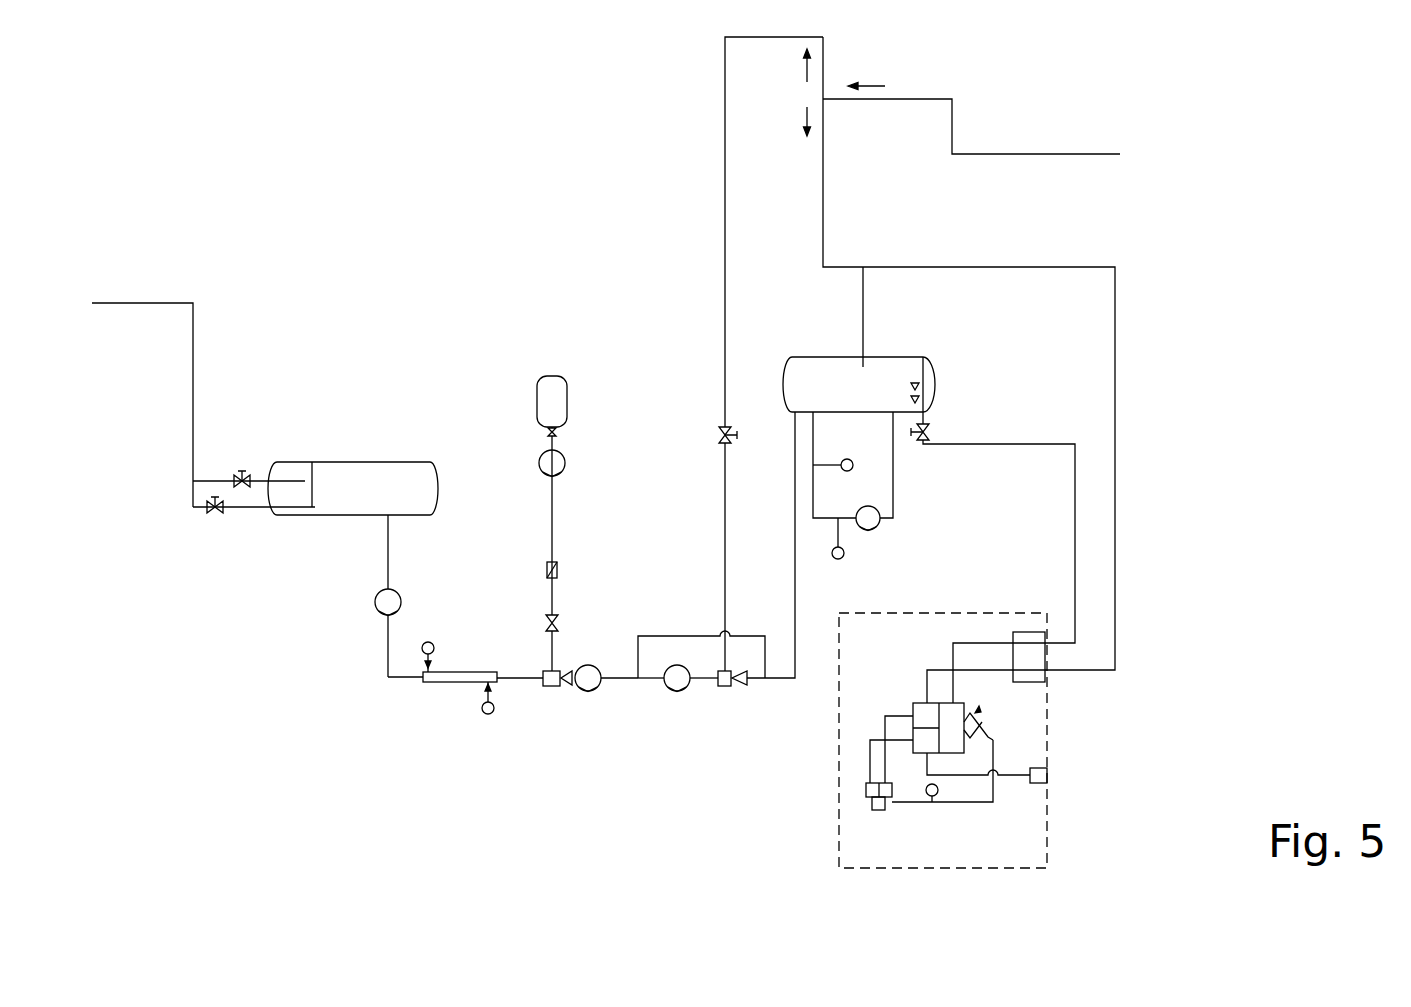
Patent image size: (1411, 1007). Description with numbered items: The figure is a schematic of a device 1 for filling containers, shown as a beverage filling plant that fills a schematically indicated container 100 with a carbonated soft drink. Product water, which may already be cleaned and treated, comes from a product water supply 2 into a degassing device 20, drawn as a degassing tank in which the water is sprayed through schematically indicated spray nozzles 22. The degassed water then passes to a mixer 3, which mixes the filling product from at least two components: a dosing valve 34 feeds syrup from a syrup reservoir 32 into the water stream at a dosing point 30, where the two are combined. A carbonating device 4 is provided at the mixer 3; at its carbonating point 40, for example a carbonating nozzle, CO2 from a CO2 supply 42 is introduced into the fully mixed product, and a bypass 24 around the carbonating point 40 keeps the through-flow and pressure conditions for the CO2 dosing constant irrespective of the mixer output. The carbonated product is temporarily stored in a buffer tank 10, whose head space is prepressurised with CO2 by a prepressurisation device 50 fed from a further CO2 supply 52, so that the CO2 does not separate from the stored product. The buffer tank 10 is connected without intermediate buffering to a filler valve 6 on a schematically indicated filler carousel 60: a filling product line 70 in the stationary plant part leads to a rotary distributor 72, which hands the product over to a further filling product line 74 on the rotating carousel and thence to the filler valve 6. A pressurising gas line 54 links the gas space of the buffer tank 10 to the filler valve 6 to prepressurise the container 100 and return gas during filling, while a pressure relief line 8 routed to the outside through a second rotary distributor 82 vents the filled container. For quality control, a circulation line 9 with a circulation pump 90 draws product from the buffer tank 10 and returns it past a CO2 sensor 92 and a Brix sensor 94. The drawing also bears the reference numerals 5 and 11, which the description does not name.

The device 1 is at (1186, 140).
The product water supply 2 is at (144, 303).
The mixer 3 is at (518, 706).
The carbonating device 4 is at (749, 708).
The carbonation section 5 is at (808, 352).
The filler valve 6 is at (866, 795).
The pressure relief line 8 is at (965, 775).
The circulation line 9 is at (910, 495).
The buffer tank 10 is at (918, 368).
The tank outlet line 11 is at (924, 410).
The degassing device 20 is at (318, 527).
The spray nozzles 22 is at (294, 478).
The bypass 24 is at (676, 636).
The dosing point 30 is at (552, 686).
The syrup reservoir 32 is at (556, 401).
The dosing valve 34 is at (558, 618).
The carbonating point 40 is at (720, 686).
The CO2 supply 42 is at (725, 198).
The prepressurisation device 50 is at (866, 357).
The CO2 supply 52 is at (823, 218).
The pressurising gas line 54 is at (1115, 482).
The filler carousel 60 is at (997, 870).
The filling product line 70 is at (1050, 443).
The rotary distributor 72 is at (1040, 678).
The further filling product line 74 is at (968, 643).
The rotary distributor 82 is at (1047, 775).
The circulation pump 90 is at (872, 523).
The CO2 sensor 92 is at (840, 559).
The Brix sensor 94 is at (847, 458).
The container 100 is at (878, 813).